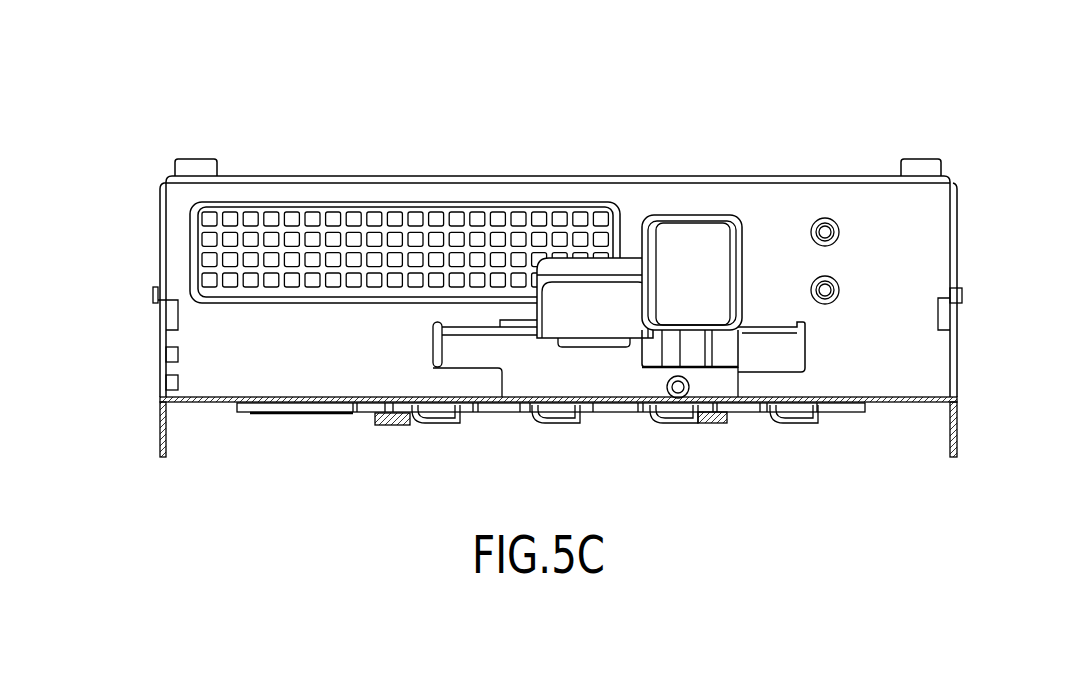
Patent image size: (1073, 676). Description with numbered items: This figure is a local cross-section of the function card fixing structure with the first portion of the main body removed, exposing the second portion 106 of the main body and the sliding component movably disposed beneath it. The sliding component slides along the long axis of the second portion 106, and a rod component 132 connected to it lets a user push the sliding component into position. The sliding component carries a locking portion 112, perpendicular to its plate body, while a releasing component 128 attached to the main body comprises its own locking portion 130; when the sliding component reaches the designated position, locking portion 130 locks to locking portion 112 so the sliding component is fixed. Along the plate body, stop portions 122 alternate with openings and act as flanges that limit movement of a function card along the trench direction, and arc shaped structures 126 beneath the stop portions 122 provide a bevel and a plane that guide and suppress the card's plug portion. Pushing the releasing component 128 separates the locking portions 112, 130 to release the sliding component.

The second portion 106 is at (927, 398).
The locking portion 112 is at (790, 357).
The stop portion 122 is at (447, 423).
The arc shaped structure 126 is at (435, 423).
The releasing component 128 is at (690, 235).
The locking portion 130 is at (725, 355).
The rod component 132 is at (594, 266).